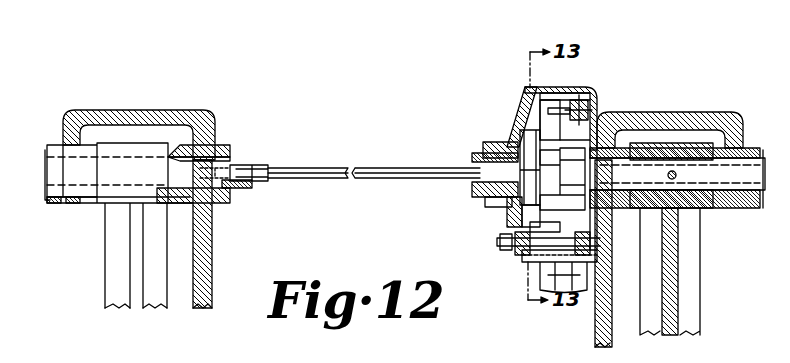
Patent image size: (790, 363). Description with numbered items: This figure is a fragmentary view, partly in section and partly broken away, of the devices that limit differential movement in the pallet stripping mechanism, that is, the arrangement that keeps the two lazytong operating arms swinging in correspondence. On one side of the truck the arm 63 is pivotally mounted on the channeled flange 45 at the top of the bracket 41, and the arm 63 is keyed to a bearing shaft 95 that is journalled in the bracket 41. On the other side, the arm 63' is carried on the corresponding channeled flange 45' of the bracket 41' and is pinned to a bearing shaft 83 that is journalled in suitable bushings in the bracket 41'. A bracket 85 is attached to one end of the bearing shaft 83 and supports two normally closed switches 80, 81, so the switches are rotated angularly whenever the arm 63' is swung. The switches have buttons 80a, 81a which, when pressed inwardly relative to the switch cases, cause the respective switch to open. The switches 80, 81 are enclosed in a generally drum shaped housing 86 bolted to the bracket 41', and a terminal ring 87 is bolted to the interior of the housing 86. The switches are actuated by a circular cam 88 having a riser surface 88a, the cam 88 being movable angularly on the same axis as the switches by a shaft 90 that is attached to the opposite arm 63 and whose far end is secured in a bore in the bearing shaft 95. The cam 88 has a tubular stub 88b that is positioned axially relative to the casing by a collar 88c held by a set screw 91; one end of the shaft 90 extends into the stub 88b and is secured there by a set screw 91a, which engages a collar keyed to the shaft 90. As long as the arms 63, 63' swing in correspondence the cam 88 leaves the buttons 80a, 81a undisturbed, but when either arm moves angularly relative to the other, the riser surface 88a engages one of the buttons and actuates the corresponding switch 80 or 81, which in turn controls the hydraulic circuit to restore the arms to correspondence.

The channeled flange 45 is at (139, 113).
The channeled flange 45' is at (670, 107).
The bearing shaft 95 is at (230, 146).
The arm 63 is at (119, 225).
The arm 63' is at (695, 271).
The bracket 41 is at (222, 234).
The bracket 41' is at (576, 253).
The shaft 90 is at (397, 170).
The circular cam 88 is at (486, 142).
The riser surface 88a is at (515, 135).
The tubular stub 88b is at (472, 188).
The collar 88c is at (475, 205).
The set screw 91 is at (500, 135).
The set screw 91a is at (495, 165).
The switch 80 is at (594, 96).
The button 80a is at (538, 95).
The housing 86 is at (590, 88).
The terminal ring 87 is at (600, 115).
The bracket 85 is at (604, 150).
The switch 81 is at (492, 242).
The button 81a is at (520, 228).
The bearing shaft 83 is at (742, 166).